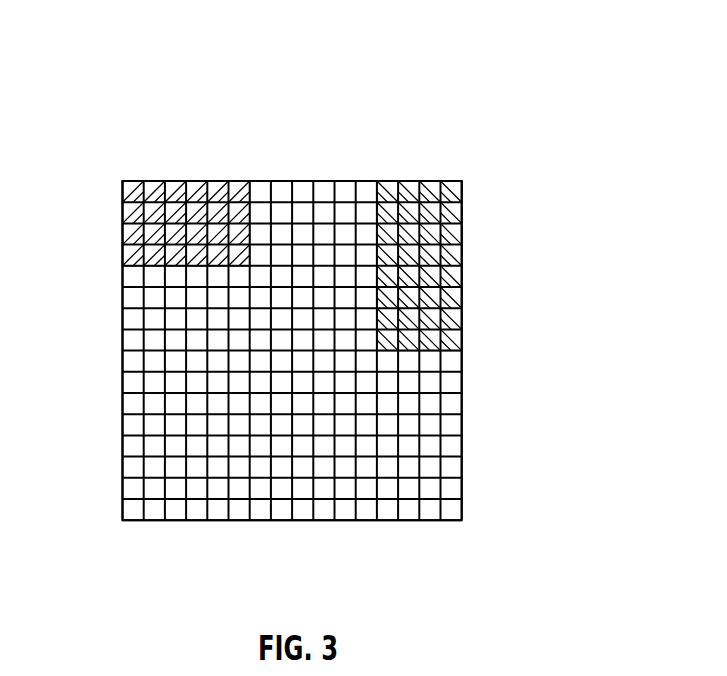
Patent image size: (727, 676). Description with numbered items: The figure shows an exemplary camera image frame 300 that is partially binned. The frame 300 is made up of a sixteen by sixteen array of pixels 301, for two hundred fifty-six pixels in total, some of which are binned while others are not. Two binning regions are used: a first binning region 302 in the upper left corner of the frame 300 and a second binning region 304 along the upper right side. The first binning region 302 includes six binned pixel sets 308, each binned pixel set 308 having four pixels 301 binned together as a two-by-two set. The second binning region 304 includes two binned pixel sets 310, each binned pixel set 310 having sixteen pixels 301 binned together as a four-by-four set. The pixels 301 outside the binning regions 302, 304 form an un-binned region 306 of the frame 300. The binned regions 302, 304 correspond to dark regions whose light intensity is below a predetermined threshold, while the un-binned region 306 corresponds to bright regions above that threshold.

The camera image frame 300 is at (342, 307).
The pixels 301 is at (135, 513).
The first binning region 302 is at (197, 176).
The second binning region 304 is at (420, 176).
The un-binned region 306 is at (311, 178).
The binned pixel set 308 is at (178, 180).
The binned pixel set 310 is at (462, 218).